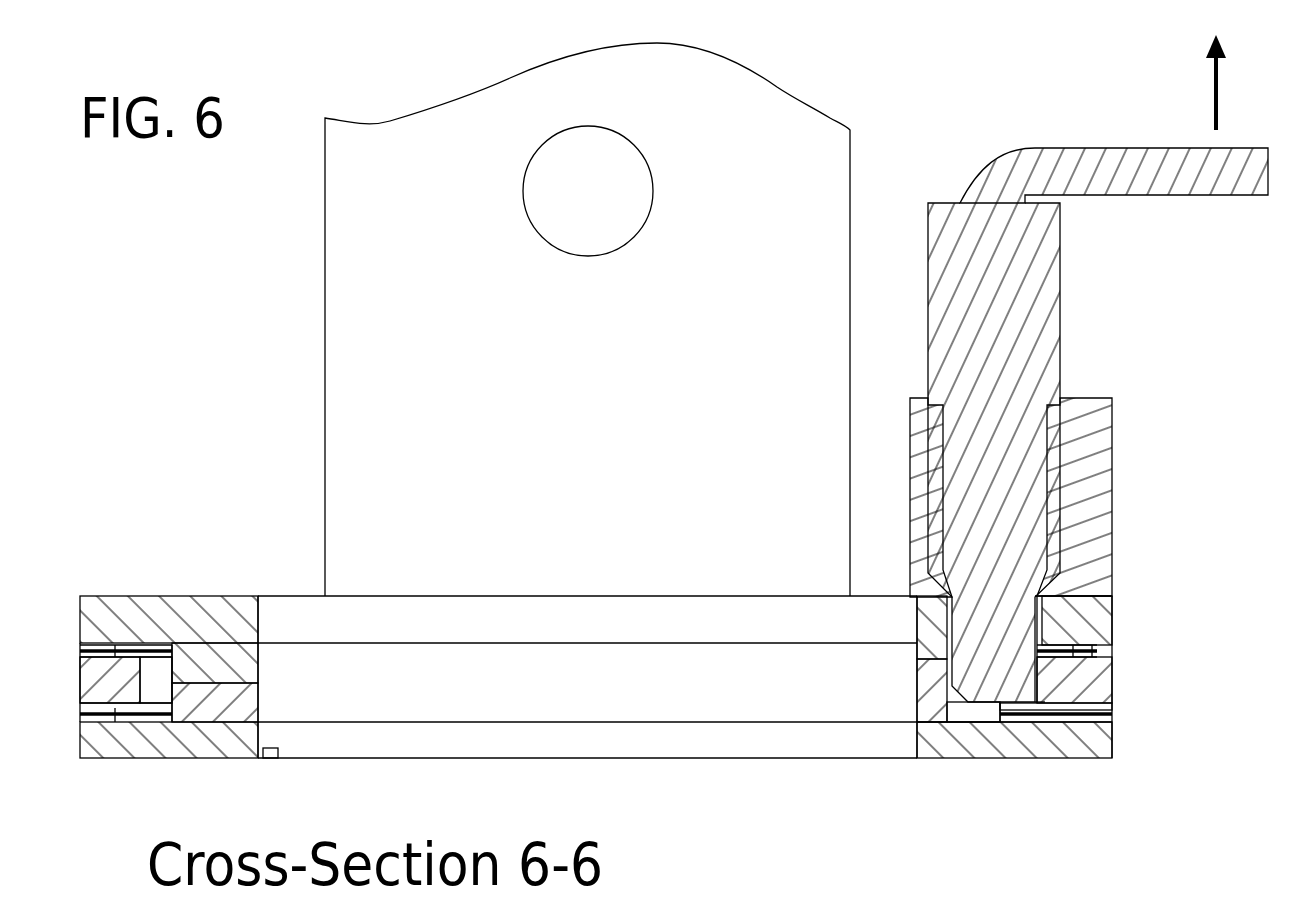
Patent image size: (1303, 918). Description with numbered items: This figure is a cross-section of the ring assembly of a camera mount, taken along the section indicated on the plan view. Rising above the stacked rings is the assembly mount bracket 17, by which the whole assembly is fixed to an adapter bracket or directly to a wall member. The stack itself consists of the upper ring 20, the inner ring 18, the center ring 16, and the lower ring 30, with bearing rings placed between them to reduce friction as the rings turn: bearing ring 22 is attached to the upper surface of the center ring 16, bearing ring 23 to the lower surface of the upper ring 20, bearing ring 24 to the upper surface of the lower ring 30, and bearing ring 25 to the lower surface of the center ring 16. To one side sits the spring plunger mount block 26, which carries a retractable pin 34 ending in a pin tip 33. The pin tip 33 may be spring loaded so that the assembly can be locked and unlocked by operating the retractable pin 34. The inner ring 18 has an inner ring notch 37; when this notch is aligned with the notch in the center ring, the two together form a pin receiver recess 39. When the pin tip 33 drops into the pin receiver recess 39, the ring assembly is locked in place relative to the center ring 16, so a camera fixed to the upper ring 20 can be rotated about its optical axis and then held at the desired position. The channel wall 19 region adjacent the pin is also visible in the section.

The center ring 16 is at (1093, 692).
The assembly mount bracket 17 is at (380, 307).
The inner ring 18 is at (250, 697).
The channel wall 19 is at (940, 683).
The upper ring 20 is at (180, 600).
The bearing ring 22 is at (1100, 652).
The bearing ring 23 is at (1095, 648).
The bearing ring 24 is at (1112, 715).
The bearing ring 25 is at (1112, 706).
The spring plunger mount block 26 is at (1087, 473).
The lower ring 30 is at (1025, 740).
The pin tip 33 is at (1013, 650).
The retractable pin 34 is at (1083, 182).
The inner ring notch 37 is at (1045, 705).
The pin receiver recess 39 is at (970, 716).